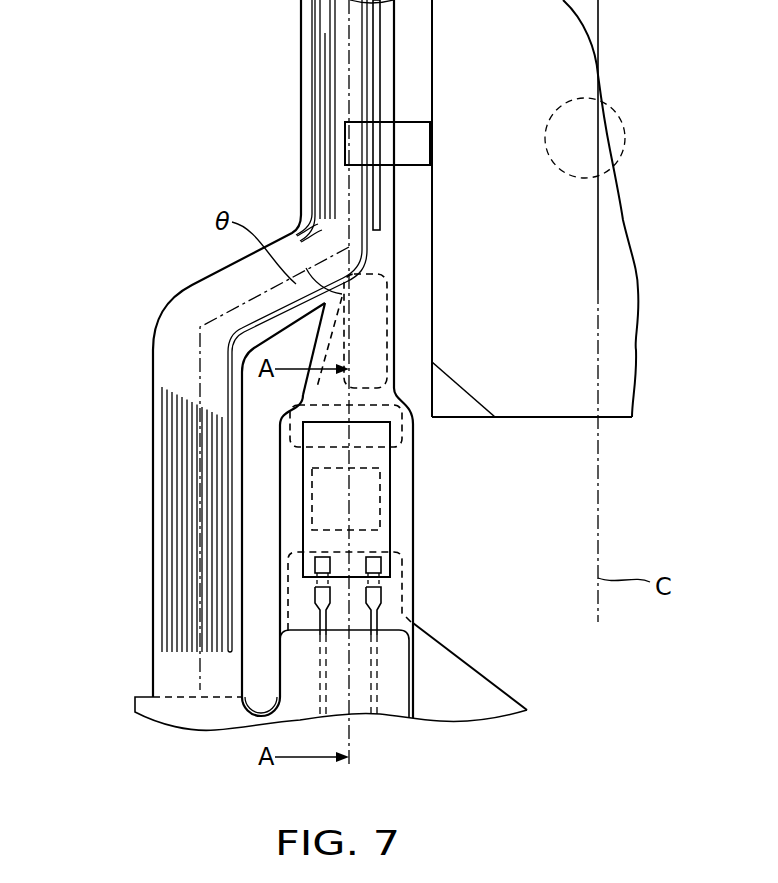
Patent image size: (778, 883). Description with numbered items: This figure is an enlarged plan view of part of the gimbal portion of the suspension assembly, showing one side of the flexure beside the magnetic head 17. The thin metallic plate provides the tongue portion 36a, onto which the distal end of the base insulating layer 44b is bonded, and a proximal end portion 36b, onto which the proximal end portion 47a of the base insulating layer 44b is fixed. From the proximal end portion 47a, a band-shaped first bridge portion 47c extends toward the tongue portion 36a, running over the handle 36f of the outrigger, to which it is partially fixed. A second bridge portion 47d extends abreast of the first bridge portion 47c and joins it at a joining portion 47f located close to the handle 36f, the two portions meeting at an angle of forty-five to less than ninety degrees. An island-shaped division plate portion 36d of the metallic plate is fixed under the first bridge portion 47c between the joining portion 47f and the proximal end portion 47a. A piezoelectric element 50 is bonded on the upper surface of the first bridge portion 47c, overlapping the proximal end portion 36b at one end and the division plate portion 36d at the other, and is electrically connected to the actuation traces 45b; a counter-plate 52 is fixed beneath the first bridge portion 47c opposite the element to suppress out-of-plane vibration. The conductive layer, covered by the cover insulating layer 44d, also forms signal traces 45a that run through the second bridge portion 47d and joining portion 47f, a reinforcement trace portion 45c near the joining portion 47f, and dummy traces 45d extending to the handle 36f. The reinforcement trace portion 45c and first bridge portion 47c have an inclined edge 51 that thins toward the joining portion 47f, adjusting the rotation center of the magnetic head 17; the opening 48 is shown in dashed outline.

The magnetic head 17 is at (632, 312).
The tongue portion 36a is at (557, 398).
The proximal end portion 36b is at (488, 690).
The division plate portion 36d is at (402, 432).
The handle 36f is at (432, 140).
The base insulating layer 44b is at (413, 575).
The cover insulating layer 44d is at (397, 658).
The signal traces 45a is at (363, 53).
The actuation traces 45b is at (377, 697).
The reinforcement trace portion 45c is at (370, 342).
The dummy traces 45d is at (382, 35).
The proximal end portion 47a is at (413, 606).
The first bridge portion 47c is at (305, 90).
The second bridge portion 47d is at (230, 553).
The joining portion 47f is at (317, 232).
The opening 48 is at (578, 100).
The piezoelectric element 50 is at (392, 487).
The inclined edge 51 is at (320, 356).
The counter-plate 52 is at (375, 512).